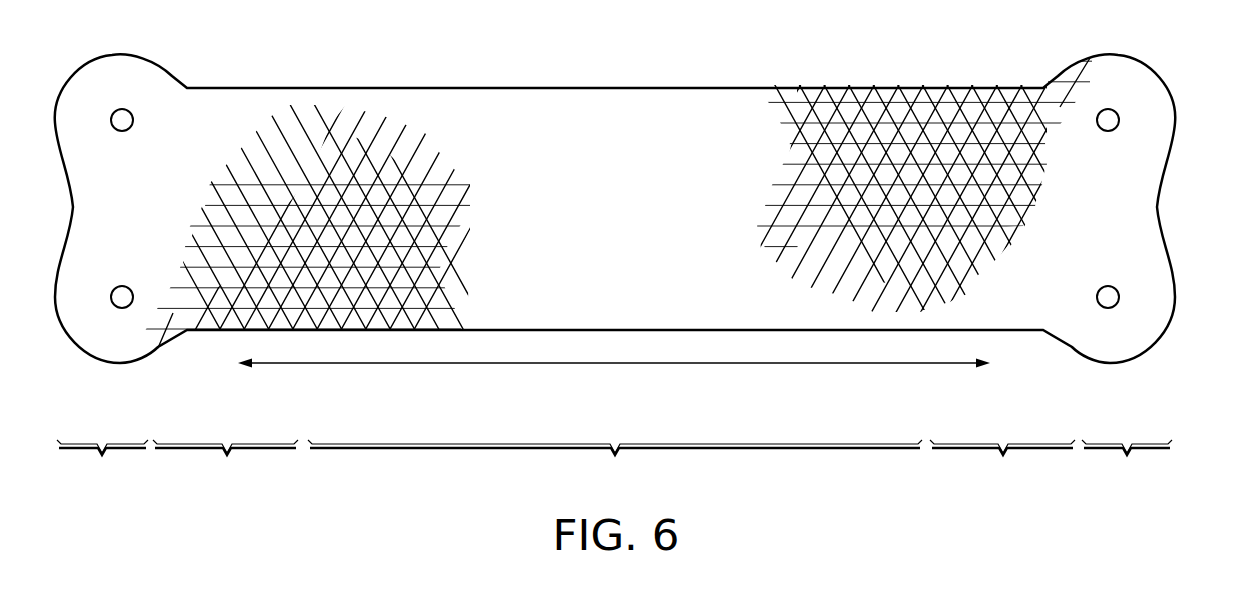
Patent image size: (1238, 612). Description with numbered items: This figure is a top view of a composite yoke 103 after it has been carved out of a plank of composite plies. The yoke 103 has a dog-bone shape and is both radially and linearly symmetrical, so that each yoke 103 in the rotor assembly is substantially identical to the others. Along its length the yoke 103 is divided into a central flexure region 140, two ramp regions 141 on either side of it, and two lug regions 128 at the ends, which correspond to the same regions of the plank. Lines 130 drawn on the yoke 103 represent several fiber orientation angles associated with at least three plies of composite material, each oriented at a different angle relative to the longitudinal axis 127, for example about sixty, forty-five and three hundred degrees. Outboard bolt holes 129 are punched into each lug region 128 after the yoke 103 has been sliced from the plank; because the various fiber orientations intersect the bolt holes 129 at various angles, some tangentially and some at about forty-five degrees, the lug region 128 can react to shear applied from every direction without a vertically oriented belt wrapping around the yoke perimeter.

The yoke 103 is at (725, 87).
The longitudinal axis 127 is at (614, 364).
The lug region 128 is at (614, 465).
The bolt hole 129 is at (121, 294).
The lines 130 is at (318, 121).
The flexure region 140 is at (615, 465).
The ramp region 141 is at (614, 465).